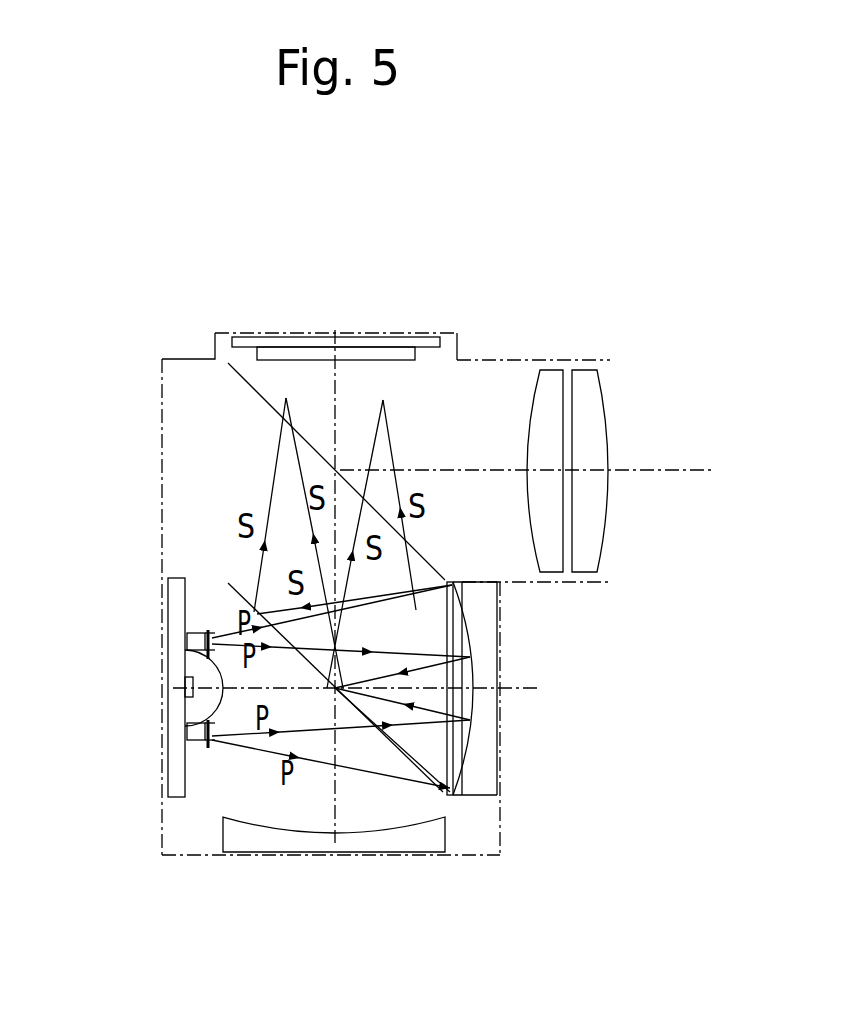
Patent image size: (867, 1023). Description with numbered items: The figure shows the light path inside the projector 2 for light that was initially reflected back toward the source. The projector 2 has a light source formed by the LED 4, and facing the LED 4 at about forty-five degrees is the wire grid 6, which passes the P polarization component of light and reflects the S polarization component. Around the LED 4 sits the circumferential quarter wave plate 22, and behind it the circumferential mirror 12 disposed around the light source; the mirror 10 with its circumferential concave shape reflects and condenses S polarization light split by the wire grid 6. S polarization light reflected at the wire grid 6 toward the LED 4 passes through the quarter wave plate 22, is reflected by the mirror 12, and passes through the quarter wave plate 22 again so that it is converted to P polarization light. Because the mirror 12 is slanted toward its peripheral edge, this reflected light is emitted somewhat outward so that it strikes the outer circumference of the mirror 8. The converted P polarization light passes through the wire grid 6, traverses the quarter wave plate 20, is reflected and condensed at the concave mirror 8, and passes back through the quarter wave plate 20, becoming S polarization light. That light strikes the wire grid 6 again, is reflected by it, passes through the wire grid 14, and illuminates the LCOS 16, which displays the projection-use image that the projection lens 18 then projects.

The projector 2 is at (336, 513).
The LED 4 is at (175, 687).
The wire grid 6 is at (241, 585).
The mirror 8 is at (483, 745).
The mirror 10 is at (278, 842).
The mirror 12 is at (202, 633).
The wire grid 14 is at (233, 368).
The LCOS 16 is at (427, 337).
The projection lens 18 is at (623, 386).
The quarter wave plate 20 is at (453, 795).
The quarter wave plate 22 is at (222, 633).